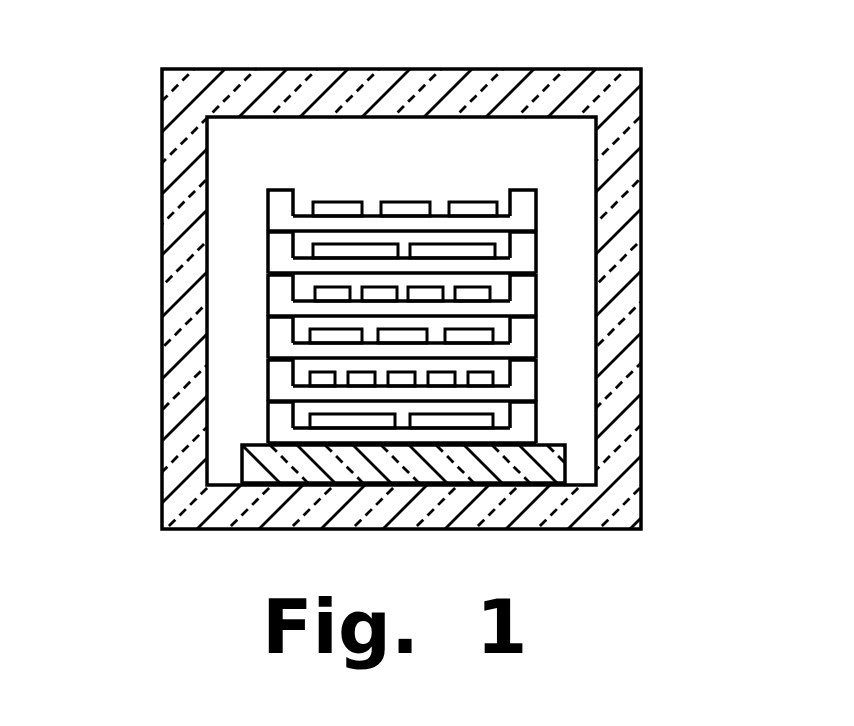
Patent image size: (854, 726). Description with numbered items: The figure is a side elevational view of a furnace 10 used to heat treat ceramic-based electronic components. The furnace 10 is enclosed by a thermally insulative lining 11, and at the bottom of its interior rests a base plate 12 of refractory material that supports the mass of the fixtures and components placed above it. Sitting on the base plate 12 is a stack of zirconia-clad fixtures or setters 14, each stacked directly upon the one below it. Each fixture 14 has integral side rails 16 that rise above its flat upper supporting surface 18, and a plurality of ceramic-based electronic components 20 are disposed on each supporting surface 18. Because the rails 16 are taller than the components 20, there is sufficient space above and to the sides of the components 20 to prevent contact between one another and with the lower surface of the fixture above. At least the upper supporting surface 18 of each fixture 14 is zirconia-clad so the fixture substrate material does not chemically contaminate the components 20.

The furnace 10 is at (130, 228).
The thermally insulative lining 11 is at (403, 90).
The base plate 12 is at (503, 474).
The zirconia-clad fixture 14 is at (238, 360).
The integral side rail 16 is at (280, 243).
The upper supporting surface 18 is at (368, 213).
The ceramic-based electronic component 20 is at (467, 203).